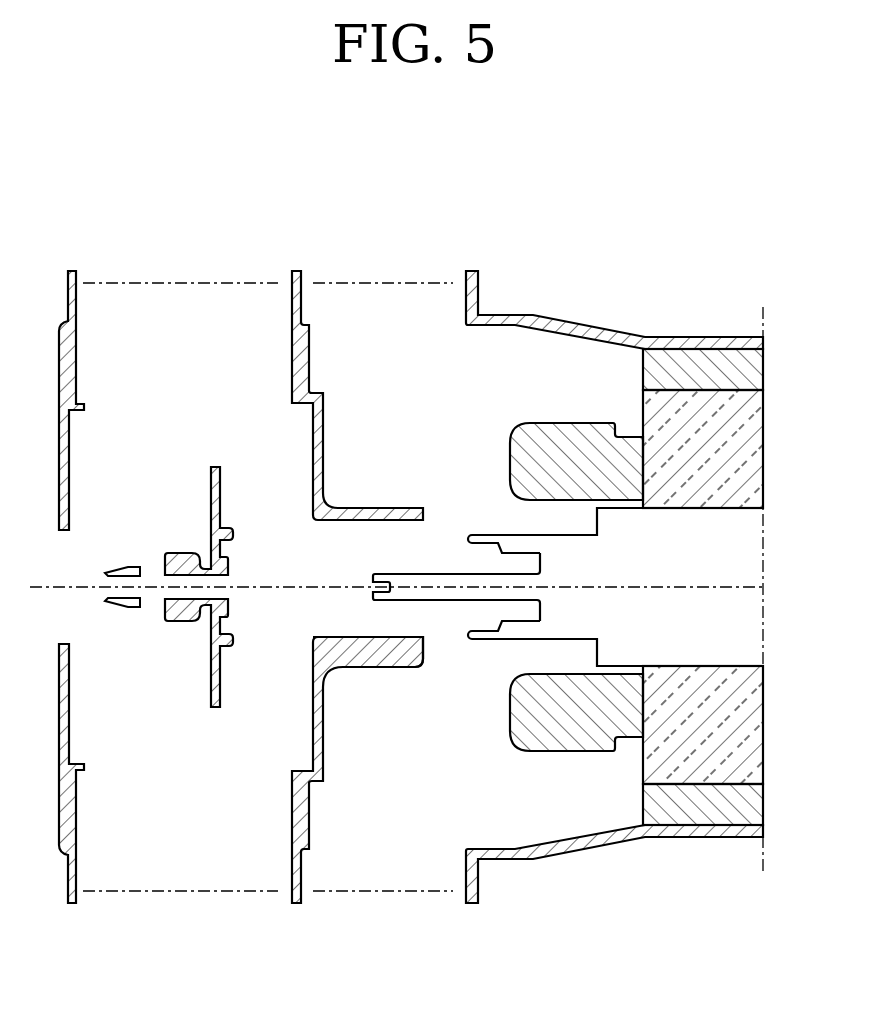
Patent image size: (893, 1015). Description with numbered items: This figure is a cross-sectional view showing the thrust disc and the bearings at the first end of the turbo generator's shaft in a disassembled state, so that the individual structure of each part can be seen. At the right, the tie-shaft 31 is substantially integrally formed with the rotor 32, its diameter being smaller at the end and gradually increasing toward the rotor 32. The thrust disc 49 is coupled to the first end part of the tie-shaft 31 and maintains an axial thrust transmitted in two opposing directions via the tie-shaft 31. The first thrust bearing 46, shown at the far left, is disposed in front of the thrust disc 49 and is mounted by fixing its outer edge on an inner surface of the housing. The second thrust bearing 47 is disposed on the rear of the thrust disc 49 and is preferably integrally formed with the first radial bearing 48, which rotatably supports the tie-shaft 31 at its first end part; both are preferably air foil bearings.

The tie-shaft 31 is at (438, 580).
The rotor 32 is at (750, 540).
The first thrust bearing 46 is at (73, 905).
The second thrust bearing 47 is at (305, 818).
The first radial bearing 48 is at (395, 655).
The thrust disc 49 is at (213, 710).